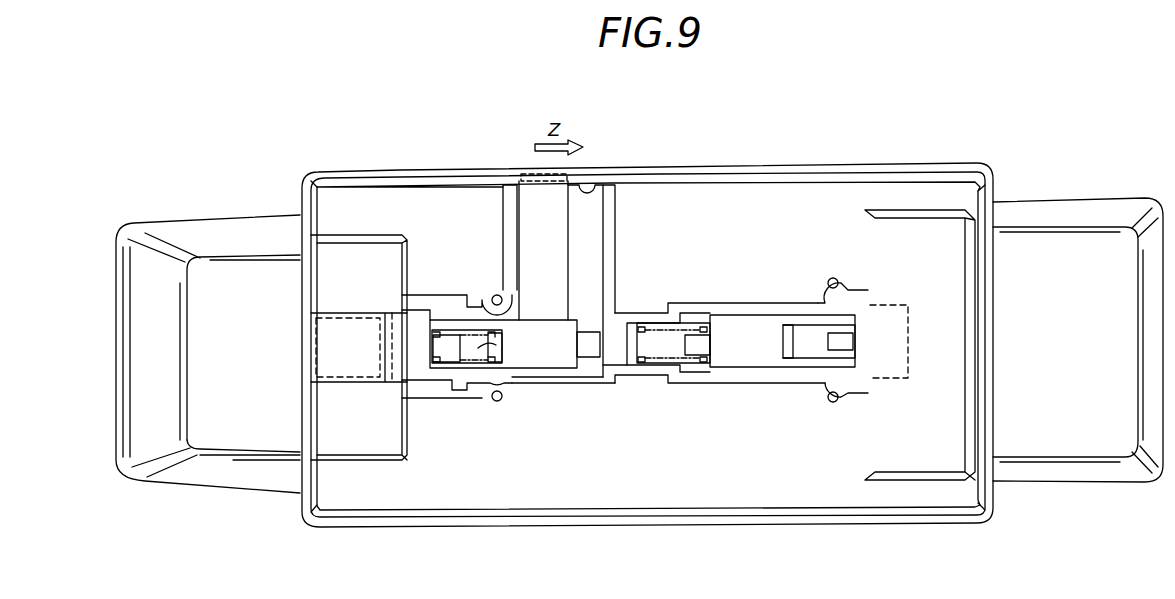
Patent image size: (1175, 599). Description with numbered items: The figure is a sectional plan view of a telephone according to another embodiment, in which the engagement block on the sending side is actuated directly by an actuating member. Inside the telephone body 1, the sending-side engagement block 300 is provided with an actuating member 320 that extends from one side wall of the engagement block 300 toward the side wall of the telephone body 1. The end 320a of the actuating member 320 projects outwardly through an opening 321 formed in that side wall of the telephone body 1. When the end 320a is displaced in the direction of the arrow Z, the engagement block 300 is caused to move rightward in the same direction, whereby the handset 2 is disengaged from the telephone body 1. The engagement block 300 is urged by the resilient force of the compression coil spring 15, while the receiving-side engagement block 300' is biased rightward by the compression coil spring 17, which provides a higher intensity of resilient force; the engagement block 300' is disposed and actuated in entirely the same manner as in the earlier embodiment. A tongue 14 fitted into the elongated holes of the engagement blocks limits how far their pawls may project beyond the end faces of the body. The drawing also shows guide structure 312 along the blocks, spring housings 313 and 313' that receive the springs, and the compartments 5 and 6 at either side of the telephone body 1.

The telephone body 1 is at (996, 162).
The handset 2 is at (1133, 196).
The compartment 5 is at (1112, 345).
The compartment 6 is at (237, 365).
The tongue 14 is at (497, 347).
The compression coil spring 15 is at (443, 363).
The compression coil spring 17 is at (692, 365).
The engagement block 300 is at (521, 398).
The engagement block 300' is at (782, 288).
The guide rail 312 is at (600, 382).
The spring housing 313 is at (467, 404).
The spring housing 313' is at (819, 390).
The actuating member 320 is at (520, 253).
The end of actuating member 320a is at (523, 171).
The opening 321 is at (596, 190).